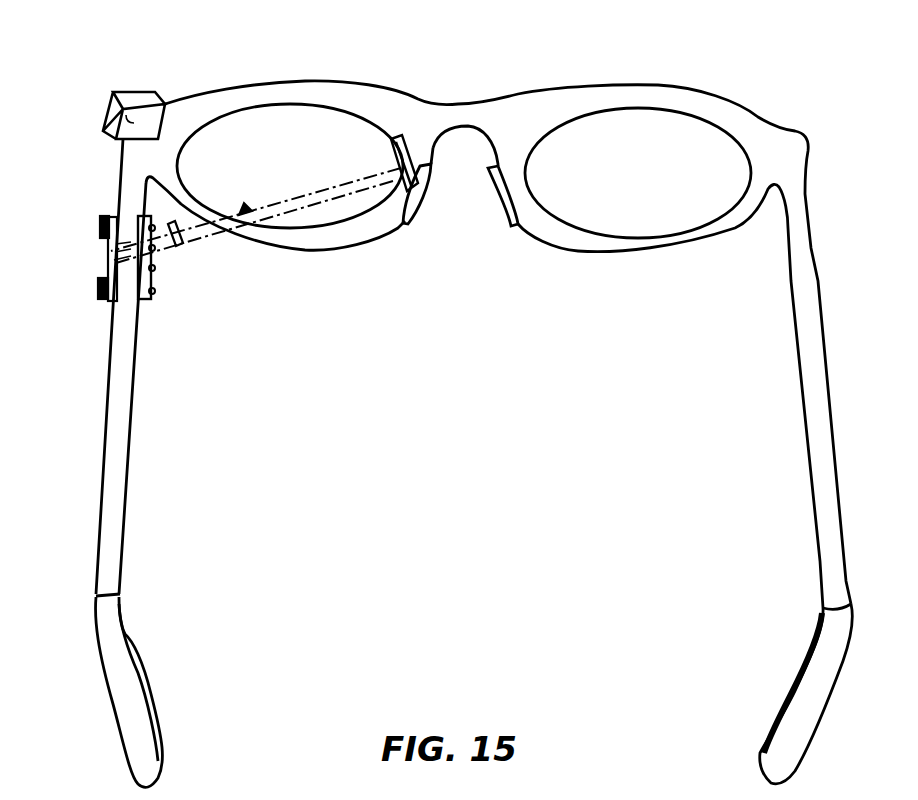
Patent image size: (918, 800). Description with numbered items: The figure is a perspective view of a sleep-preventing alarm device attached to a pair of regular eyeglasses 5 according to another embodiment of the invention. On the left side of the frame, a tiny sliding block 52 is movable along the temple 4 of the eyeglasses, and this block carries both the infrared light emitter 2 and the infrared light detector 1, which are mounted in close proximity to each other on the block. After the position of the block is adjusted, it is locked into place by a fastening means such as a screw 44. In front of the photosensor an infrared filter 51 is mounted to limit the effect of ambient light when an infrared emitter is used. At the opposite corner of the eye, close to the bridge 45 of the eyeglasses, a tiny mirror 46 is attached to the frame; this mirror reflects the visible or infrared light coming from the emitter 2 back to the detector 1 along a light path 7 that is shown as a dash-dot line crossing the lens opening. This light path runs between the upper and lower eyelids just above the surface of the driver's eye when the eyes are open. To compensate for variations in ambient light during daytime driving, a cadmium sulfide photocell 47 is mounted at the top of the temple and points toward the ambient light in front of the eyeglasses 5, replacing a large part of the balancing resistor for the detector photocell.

The infrared light detector 1 is at (157, 243).
The infrared light emitter 2 is at (157, 260).
The temple 4 is at (122, 432).
The eyeglasses 5 is at (281, 93).
The light path 7 is at (285, 208).
The screw 44 is at (153, 293).
The bridge 45 is at (496, 122).
The mirror 46 is at (407, 153).
The cadmium sulfide photocell 47 is at (112, 110).
The infrared filter 51 is at (200, 214).
The sliding block 52 is at (113, 258).